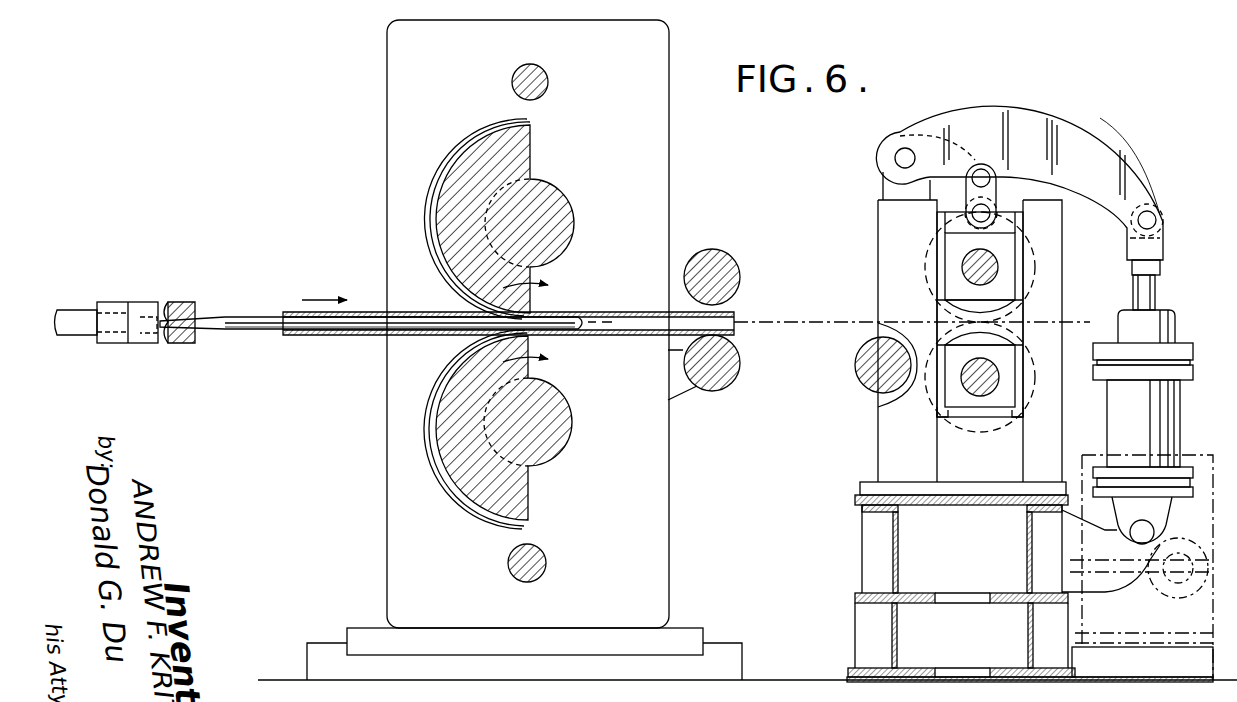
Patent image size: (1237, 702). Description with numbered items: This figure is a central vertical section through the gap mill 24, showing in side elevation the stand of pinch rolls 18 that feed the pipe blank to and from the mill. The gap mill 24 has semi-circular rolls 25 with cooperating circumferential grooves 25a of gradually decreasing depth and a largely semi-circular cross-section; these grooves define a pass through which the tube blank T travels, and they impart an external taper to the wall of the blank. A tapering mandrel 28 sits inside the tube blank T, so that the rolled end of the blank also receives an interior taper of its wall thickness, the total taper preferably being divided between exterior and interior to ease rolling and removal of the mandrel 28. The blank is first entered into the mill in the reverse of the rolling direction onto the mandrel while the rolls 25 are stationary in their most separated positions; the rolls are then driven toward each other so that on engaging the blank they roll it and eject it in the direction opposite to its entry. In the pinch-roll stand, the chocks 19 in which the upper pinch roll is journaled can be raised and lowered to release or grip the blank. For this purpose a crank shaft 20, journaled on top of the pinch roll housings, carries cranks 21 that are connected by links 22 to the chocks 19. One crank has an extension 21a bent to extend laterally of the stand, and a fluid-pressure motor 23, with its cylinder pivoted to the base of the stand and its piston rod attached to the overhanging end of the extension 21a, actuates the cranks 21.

The pinch rolls 18 is at (730, 266).
The chocks 19 is at (953, 285).
The crank shaft 20 is at (895, 159).
The cranks 21 is at (957, 150).
The extension 21a is at (1102, 146).
The links 22 is at (997, 192).
The fluid-pressure motor 23 is at (1140, 436).
The gap mill 24 is at (675, 186).
The semi-circular rolls 25 is at (518, 162).
The circumferential grooves 25a is at (452, 175).
The tapering mandrel 28 is at (257, 320).
The tube blank T is at (605, 311).